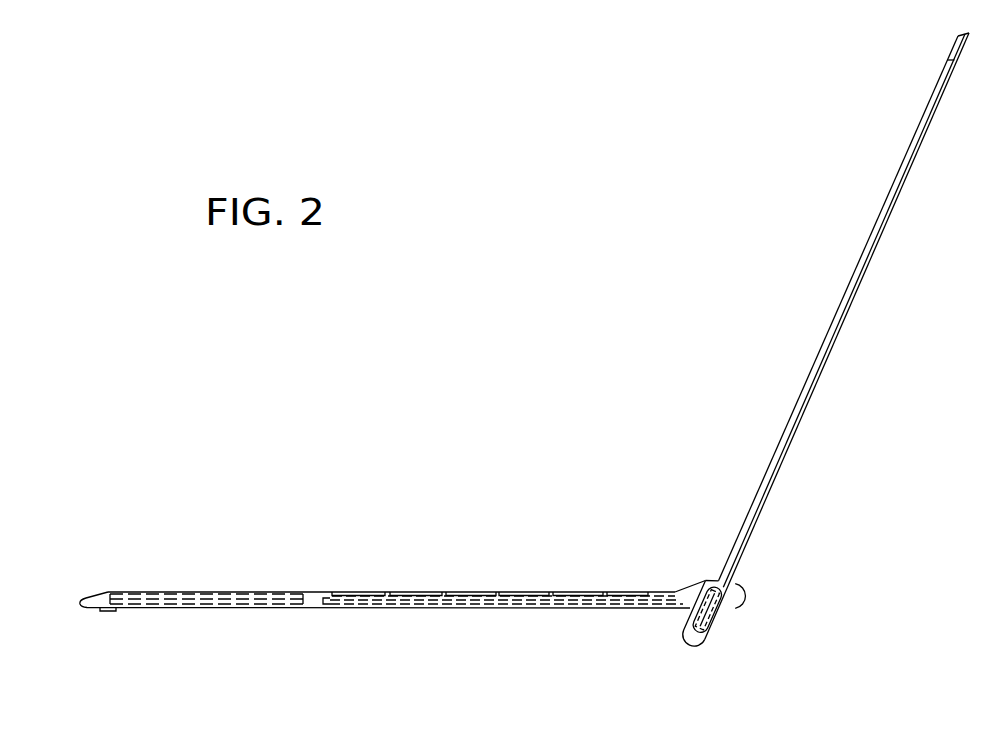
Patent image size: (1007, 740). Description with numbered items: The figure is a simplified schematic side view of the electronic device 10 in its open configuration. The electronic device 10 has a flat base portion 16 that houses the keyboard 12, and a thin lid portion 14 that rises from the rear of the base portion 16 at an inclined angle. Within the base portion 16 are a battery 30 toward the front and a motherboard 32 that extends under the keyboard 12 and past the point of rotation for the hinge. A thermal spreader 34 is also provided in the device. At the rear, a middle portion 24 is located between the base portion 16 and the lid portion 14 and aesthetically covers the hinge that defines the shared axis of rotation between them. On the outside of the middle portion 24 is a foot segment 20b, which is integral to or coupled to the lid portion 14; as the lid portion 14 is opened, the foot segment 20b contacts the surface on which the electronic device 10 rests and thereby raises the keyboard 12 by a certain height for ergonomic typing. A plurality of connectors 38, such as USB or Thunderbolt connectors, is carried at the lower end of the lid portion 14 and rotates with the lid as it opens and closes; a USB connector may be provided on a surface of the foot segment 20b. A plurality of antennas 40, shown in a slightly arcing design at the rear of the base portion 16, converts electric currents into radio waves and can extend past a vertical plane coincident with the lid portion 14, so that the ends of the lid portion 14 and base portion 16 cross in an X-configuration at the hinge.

The electronic device 10 is at (446, 316).
The keyboard 12 is at (355, 591).
The lid portion 14 is at (856, 319).
The base portion 16 is at (256, 616).
The foot segment 20b is at (717, 618).
The middle portion 24 is at (700, 583).
The battery 30 is at (175, 595).
The motherboard 32 is at (387, 610).
The thermal spreader 34 is at (750, 592).
The connectors 38 is at (700, 645).
The antennas 40 is at (752, 599).